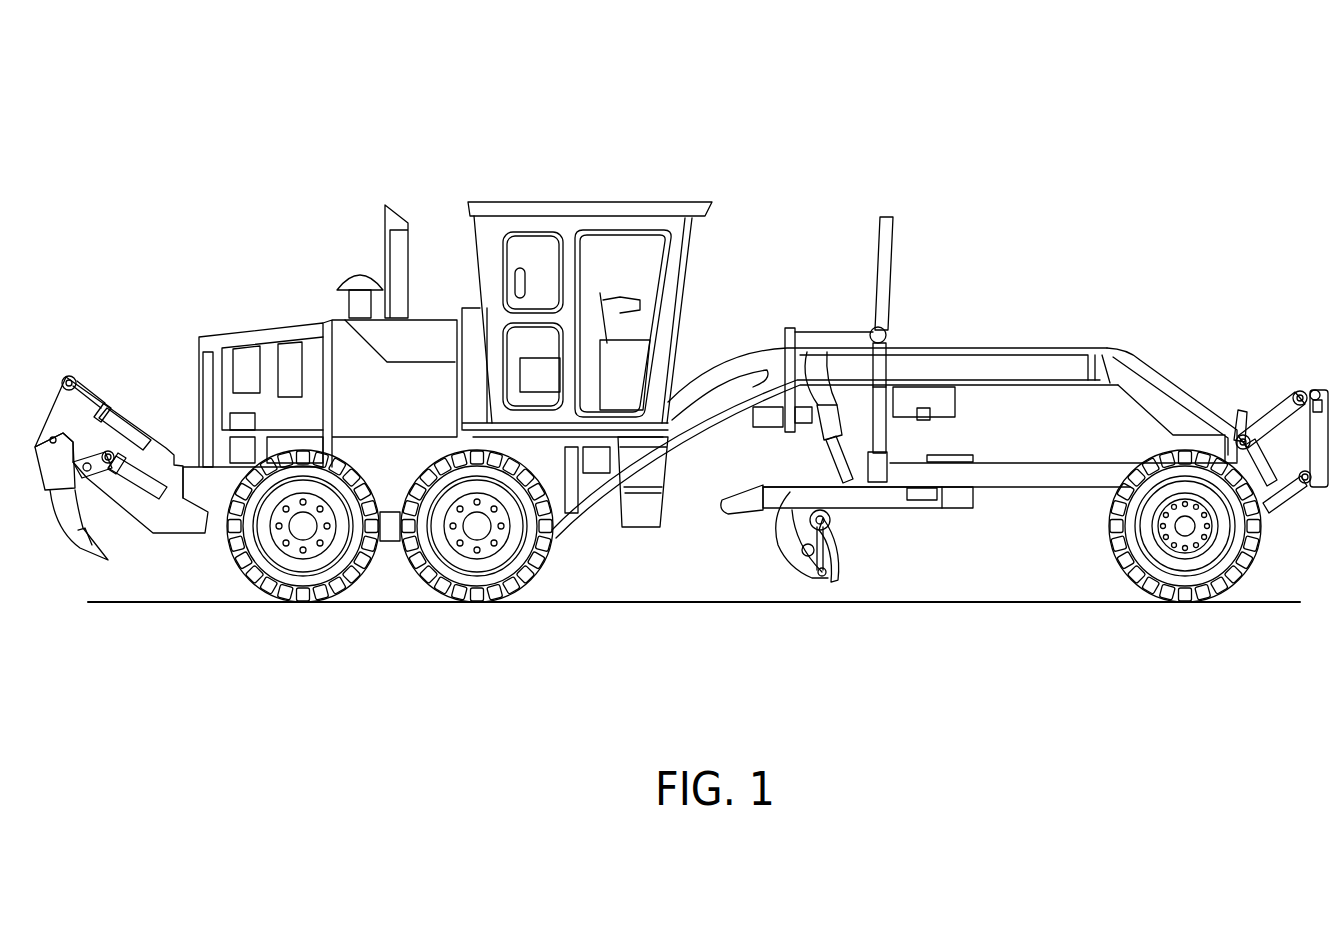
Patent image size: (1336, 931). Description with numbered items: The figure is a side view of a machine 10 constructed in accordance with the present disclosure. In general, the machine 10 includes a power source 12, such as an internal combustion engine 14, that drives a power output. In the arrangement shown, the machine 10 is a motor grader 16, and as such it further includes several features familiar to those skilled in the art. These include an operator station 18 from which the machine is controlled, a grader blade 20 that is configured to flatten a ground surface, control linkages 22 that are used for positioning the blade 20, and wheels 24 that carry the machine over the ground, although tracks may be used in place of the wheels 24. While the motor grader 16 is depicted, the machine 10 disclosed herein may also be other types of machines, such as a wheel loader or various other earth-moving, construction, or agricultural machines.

The machine 10 is at (801, 118).
The power source 12 is at (310, 370).
The internal combustion engine 14 is at (316, 362).
The motor grader 16 is at (801, 146).
The operator station 18 is at (535, 253).
The grader blade 20 is at (838, 550).
The control linkages 22 is at (880, 417).
The wheels 24 is at (456, 603).